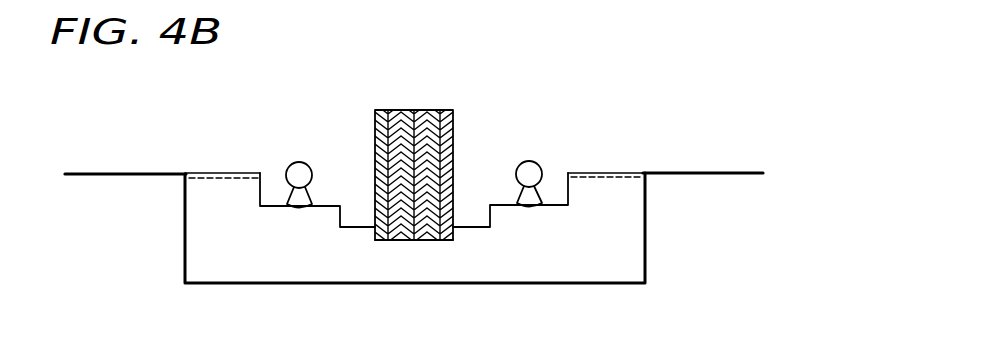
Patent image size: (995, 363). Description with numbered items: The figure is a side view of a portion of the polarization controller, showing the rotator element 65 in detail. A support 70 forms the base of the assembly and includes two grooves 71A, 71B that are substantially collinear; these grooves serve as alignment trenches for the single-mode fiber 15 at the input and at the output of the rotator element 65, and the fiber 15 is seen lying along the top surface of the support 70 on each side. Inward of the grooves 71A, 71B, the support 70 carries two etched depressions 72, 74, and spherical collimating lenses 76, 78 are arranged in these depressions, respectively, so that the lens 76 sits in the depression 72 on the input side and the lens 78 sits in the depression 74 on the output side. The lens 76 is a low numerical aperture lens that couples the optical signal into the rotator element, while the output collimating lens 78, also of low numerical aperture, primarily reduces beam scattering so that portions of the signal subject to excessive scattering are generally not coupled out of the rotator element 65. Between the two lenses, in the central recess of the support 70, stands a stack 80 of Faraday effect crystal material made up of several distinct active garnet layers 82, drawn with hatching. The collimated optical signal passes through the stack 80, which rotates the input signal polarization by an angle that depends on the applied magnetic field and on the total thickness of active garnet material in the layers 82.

The single-mode fiber 15 is at (107, 173).
The rotator element 65 is at (633, 64).
The support 70 is at (185, 207).
The groove 71A is at (214, 178).
The groove 71B is at (611, 180).
The etched depression 72 is at (275, 210).
The etched depression 74 is at (555, 210).
The spherical collimating lens 76 is at (296, 161).
The spherical collimating lens 78 is at (533, 161).
The stack 80 is at (453, 103).
The active garnet layers 82 is at (398, 242).